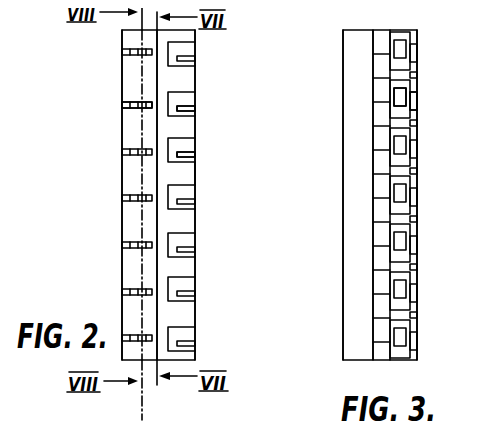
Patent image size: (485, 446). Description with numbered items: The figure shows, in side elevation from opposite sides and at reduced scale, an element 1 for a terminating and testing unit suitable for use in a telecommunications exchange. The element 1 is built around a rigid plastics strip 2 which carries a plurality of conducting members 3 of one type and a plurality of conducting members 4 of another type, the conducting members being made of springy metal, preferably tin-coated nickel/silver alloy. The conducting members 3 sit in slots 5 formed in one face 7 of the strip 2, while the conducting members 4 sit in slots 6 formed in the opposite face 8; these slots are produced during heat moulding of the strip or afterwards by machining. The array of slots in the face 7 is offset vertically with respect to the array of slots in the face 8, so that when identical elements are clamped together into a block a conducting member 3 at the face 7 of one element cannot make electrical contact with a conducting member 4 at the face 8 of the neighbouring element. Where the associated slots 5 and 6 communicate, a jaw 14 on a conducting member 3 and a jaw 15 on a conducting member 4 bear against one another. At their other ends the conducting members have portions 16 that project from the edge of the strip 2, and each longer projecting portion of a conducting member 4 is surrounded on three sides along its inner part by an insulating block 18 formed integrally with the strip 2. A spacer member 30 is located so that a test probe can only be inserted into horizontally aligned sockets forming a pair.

In FIG. 2, the element 1 is at (112, 225).
In FIG. 2, the rigid plastics strip 2 is at (168, 226).
In FIG. 3, the rigid plastics strip 2 is at (378, 230).
In FIG. 2, the conducting member of one type 3 is at (130, 106).
In FIG. 2, the conducting member of another type 4 is at (180, 148).
In FIG. 2, the slot 5 is at (128, 92).
In FIG. 2, the slot 6 is at (185, 94).
In FIG. 2, the face 7 is at (112, 160).
In FIG. 3, the face 7 is at (422, 190).
In FIG. 2, the face 8 is at (202, 179).
In FIG. 3, the face 8 is at (334, 199).
In FIG. 3, the jaw 14 is at (405, 97).
In FIG. 3, the jaw 15 is at (410, 100).
In FIG. 3, the projecting portion 16 is at (403, 92).
In FIG. 2, the insulating block 18 is at (193, 118).
In FIG. 3, the spacer member 30 is at (352, 155).